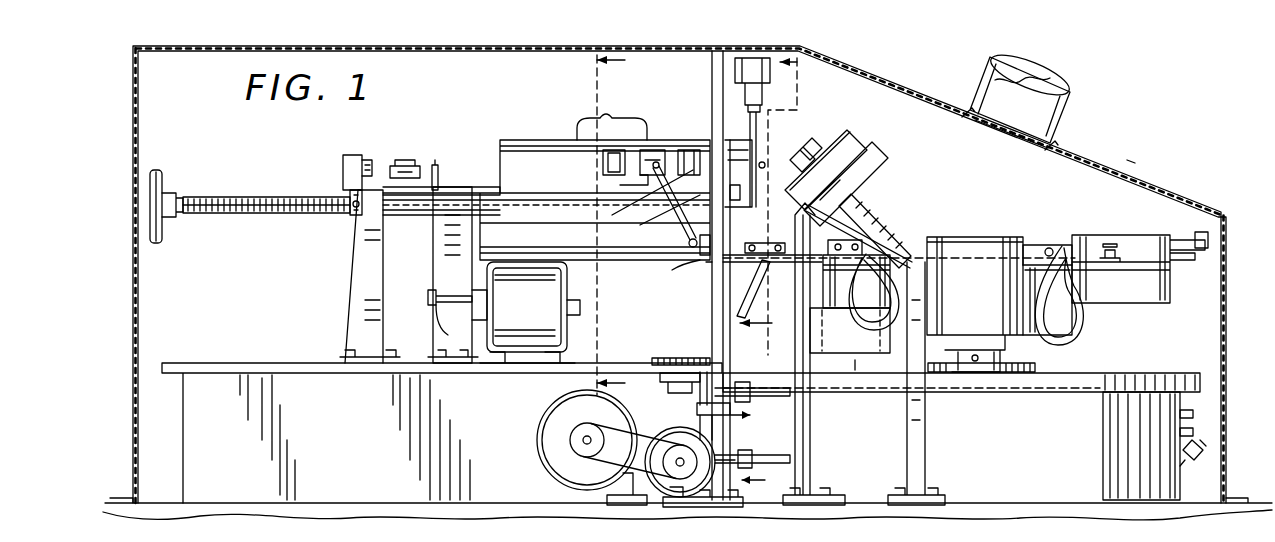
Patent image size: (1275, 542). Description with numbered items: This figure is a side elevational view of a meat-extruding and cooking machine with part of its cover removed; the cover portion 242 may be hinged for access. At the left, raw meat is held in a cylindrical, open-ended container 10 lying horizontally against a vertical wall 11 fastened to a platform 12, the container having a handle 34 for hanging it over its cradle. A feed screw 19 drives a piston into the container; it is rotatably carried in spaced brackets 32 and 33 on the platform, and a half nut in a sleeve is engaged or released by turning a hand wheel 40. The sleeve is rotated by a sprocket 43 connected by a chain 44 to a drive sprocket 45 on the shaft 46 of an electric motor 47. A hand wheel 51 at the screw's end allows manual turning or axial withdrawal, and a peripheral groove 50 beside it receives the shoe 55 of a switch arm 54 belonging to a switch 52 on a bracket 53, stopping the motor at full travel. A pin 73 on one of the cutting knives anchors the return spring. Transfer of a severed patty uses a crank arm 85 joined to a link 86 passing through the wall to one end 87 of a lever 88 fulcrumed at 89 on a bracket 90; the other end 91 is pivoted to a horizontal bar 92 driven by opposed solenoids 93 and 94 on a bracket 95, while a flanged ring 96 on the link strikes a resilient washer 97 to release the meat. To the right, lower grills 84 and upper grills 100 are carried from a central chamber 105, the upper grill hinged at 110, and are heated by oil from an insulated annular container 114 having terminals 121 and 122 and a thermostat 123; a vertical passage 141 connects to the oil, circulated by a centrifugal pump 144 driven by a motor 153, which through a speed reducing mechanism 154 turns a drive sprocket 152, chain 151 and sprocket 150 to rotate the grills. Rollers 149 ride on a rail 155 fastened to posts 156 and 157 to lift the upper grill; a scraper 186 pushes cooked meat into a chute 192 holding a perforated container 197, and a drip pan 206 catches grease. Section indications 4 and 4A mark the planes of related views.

The container 10 is at (508, 140).
The vertical wall 11 is at (720, 74).
The platform 12 is at (604, 366).
The feed screw 19 is at (240, 180).
The bracket 32 is at (458, 186).
The bracket 33 is at (368, 272).
The handle 34 is at (600, 116).
The hand wheel 40 is at (396, 166).
The sprocket 43 is at (434, 162).
The chain 44 is at (436, 250).
The drive sprocket 45 is at (430, 296).
The shaft 46 is at (438, 322).
The electric motor 47 is at (530, 301).
The peripheral groove 50 is at (180, 193).
The hand wheel 51 is at (156, 170).
The switch 52 is at (350, 156).
The bracket 53 is at (370, 160).
The switch arm 54 is at (350, 192).
The shoe 55 is at (350, 206).
The pin 73 is at (765, 165).
The lower grill 84 is at (855, 296).
The crank arm 85 is at (766, 270).
The link 86 is at (752, 247).
The end of lever 87 is at (690, 243).
The lever 88 is at (670, 214).
The fulcrum 89 is at (640, 208).
The bracket 90 is at (681, 206).
The end of lever 91 is at (620, 185).
The horizontal bar 92 is at (660, 150).
The solenoid 93 is at (603, 164).
The solenoid 94 is at (692, 150).
The bracket 95 is at (642, 140).
The flanged ring 96 is at (705, 262).
The washer 97 is at (708, 263).
The upper grill 100 is at (892, 210).
The chamber 105 is at (982, 240).
The hinge 110 is at (1051, 247).
The annular container 114 is at (1060, 431).
The external terminal 121 is at (1195, 413).
The external terminal 122 is at (1195, 432).
The thermostat 123 is at (1206, 448).
The vertical passage 141 is at (1076, 150).
The centrifugal pump 144 is at (703, 480).
The roller 149 is at (808, 140).
The sprocket 150 is at (1036, 365).
The chain 151 is at (743, 411).
The drive sprocket 152 is at (658, 368).
The motor 153 is at (555, 433).
The speed reducing mechanism 154 is at (675, 424).
The rail 155 is at (870, 180).
The post 156 is at (925, 463).
The post 157 is at (812, 466).
The scraper 186 is at (876, 247).
The chute 192 is at (862, 339).
The container 197 is at (858, 357).
The drip pan 206 is at (1112, 376).
The hinged cover portion 242 is at (1128, 168).
The section line 4 is at (780, 206).
The section line 4A is at (628, 227).